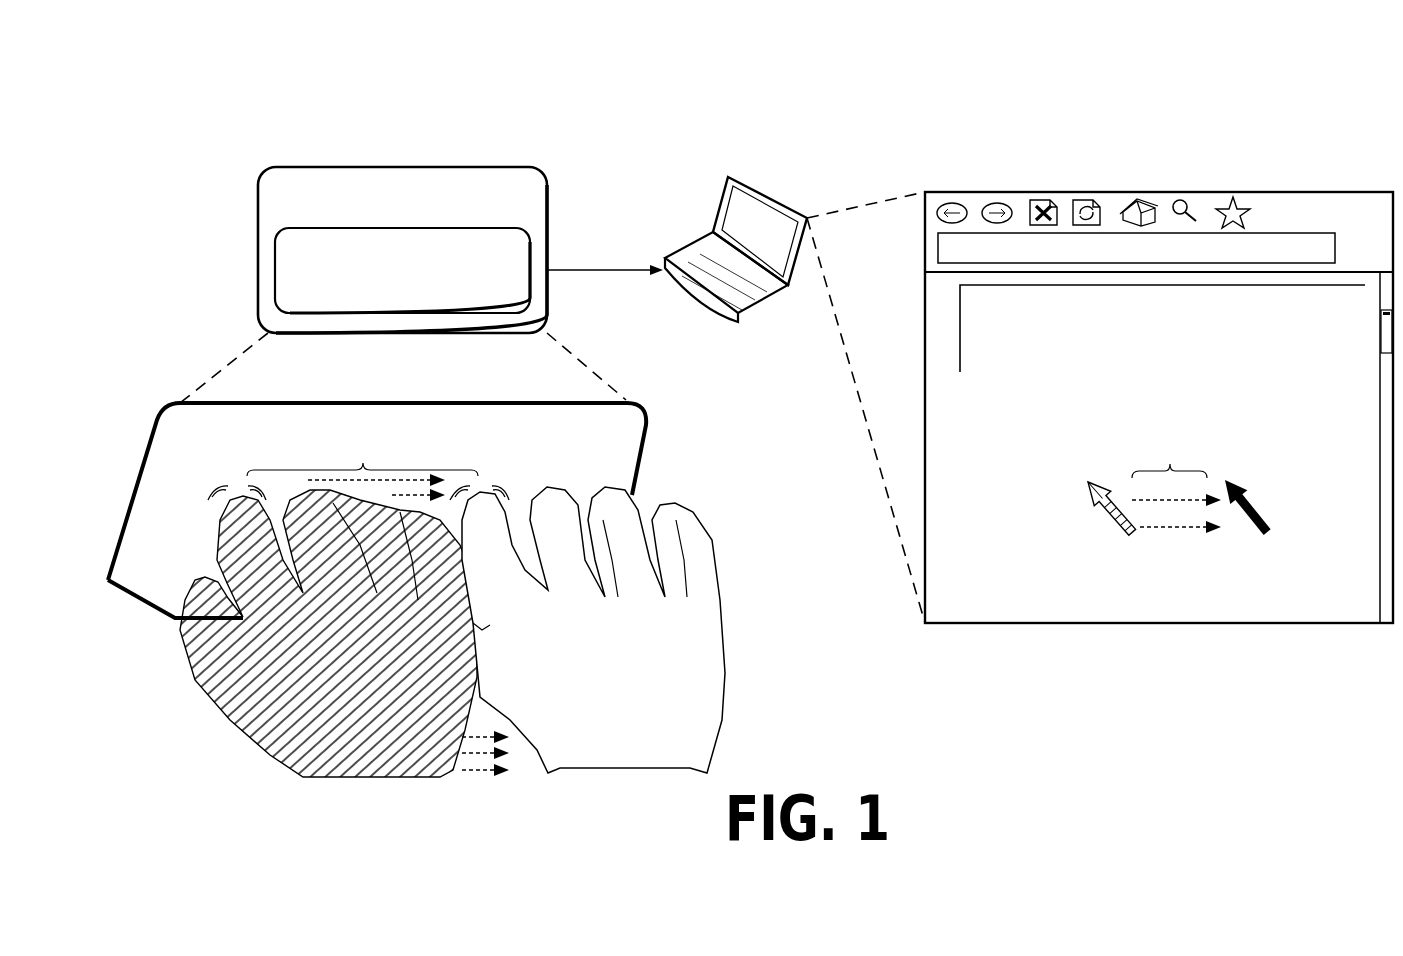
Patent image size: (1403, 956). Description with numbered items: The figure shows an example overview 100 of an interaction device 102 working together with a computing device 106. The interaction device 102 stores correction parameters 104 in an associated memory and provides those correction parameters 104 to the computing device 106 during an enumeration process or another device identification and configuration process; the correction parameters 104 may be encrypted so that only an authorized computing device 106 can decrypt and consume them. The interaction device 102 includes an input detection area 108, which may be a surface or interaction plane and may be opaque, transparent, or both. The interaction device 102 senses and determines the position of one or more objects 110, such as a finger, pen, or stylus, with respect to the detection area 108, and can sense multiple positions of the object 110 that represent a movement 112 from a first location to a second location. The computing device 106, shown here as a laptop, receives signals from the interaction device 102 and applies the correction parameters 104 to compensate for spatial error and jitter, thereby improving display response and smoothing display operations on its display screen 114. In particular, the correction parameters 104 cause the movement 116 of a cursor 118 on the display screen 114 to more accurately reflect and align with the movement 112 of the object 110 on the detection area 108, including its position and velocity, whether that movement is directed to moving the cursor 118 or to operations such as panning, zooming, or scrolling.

The overview 100 is at (170, 70).
The interaction device 102 is at (386, 219).
The correction parameters 104 is at (386, 293).
The computing device 106 is at (738, 310).
The input detection area 108 is at (180, 403).
The object 110 is at (233, 490).
The movement 112 is at (378, 603).
The display screen 114 is at (1088, 162).
The movement 116 is at (1204, 486).
The cursor 118 is at (1110, 512).